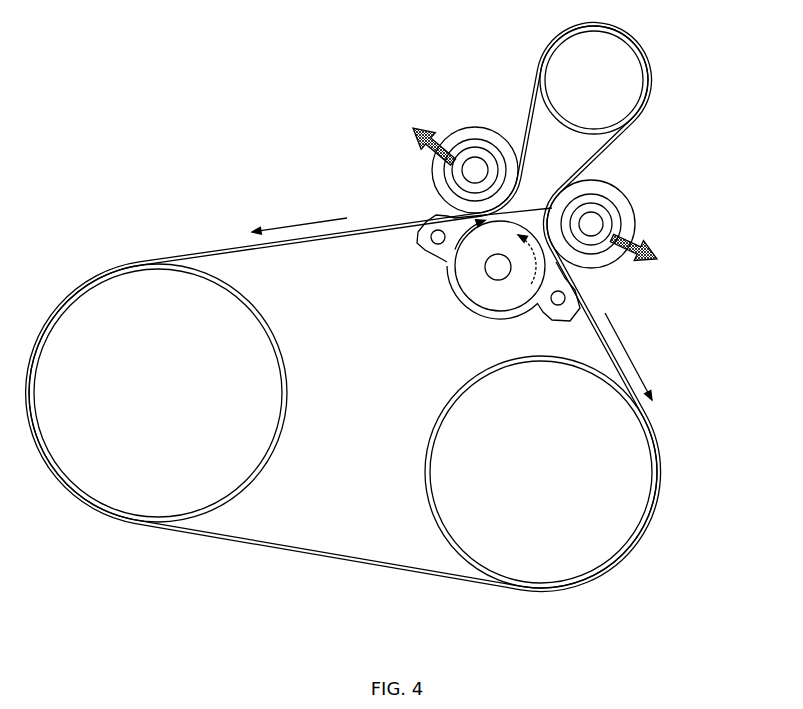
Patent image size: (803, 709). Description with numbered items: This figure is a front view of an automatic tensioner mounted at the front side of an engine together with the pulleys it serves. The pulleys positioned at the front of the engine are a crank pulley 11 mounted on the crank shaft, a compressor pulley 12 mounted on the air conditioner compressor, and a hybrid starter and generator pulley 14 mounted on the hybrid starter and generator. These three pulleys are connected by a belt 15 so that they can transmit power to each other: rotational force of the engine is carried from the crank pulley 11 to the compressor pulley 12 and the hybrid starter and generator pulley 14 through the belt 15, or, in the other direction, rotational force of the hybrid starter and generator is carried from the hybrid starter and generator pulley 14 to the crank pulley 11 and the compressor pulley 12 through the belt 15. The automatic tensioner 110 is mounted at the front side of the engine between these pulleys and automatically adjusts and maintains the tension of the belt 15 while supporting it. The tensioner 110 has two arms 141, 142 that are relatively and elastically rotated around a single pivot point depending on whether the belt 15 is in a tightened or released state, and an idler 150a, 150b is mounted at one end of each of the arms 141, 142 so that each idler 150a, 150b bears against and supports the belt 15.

The crank pulley 11 is at (108, 305).
The compressor pulley 12 is at (638, 480).
The hybrid starter and generator pulley 14 is at (631, 78).
The belt 15 is at (305, 549).
The automatic tensioner 110 is at (445, 300).
The arm 141 is at (438, 247).
The arm 142 is at (495, 310).
The idler 150a is at (473, 135).
The idler 150b is at (620, 203).